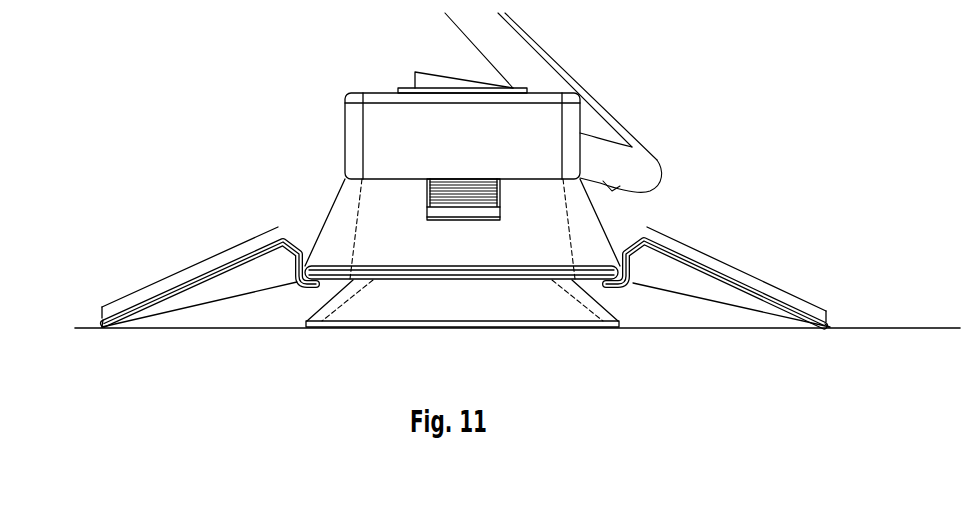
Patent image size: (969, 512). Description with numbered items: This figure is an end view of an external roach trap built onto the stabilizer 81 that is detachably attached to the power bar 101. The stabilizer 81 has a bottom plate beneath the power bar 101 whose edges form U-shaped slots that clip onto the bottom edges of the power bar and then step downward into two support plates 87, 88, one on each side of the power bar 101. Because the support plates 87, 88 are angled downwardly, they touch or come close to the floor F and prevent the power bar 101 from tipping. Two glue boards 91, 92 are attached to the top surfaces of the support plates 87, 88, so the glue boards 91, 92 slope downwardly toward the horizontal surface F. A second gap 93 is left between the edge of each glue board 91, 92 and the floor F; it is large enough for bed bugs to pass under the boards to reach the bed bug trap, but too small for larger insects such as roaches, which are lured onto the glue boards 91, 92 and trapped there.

The power bar 101 is at (383, 117).
The glue board 91 is at (192, 268).
The glue board 92 is at (697, 252).
The support plate 87 is at (190, 283).
The support plate 88 is at (712, 270).
The second gap 93 is at (97, 327).
The stabilizer 81 is at (297, 282).
The floor surface F is at (747, 327).